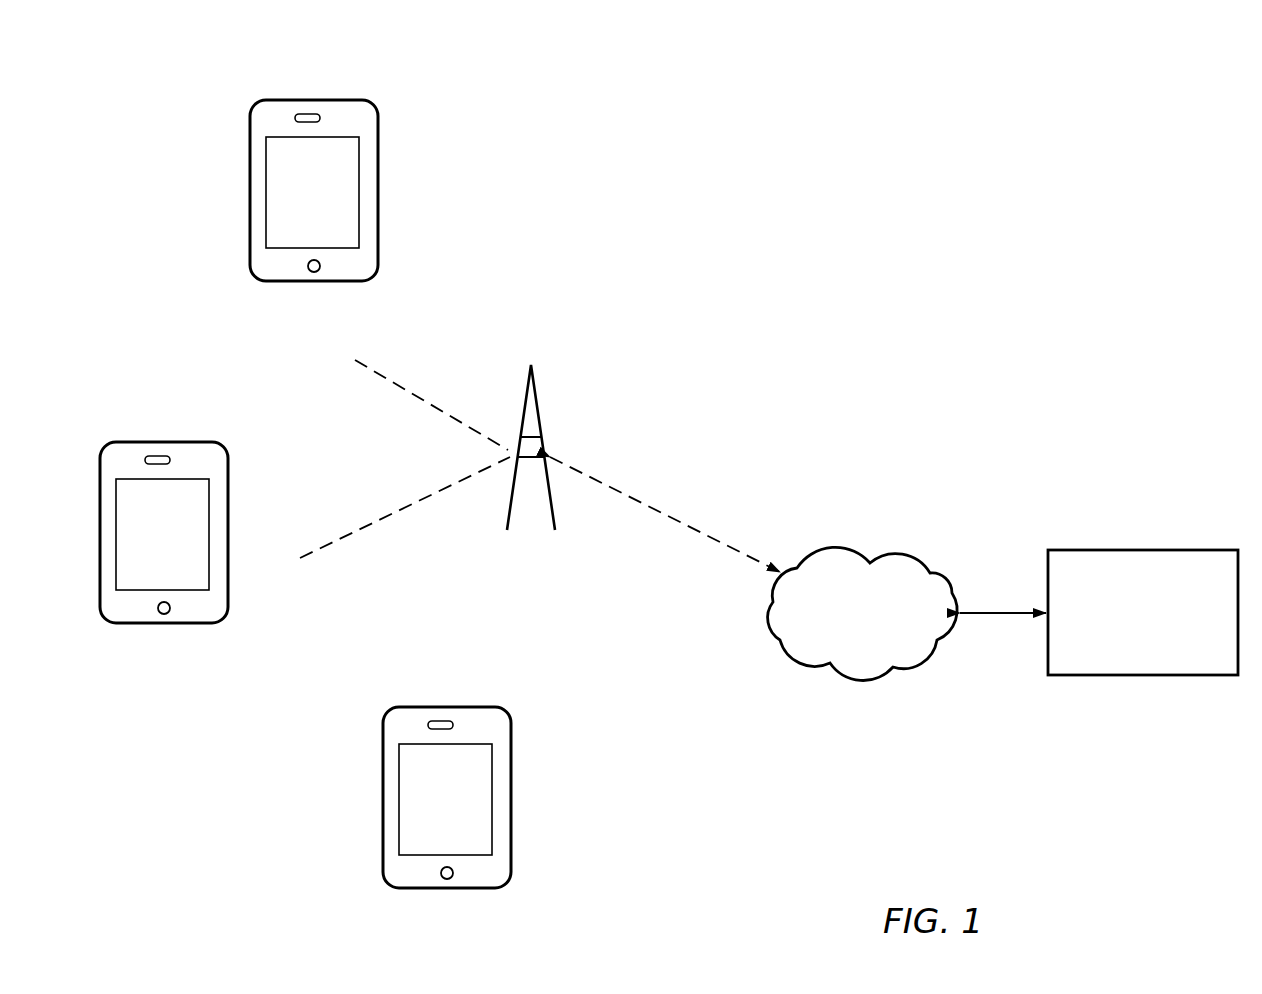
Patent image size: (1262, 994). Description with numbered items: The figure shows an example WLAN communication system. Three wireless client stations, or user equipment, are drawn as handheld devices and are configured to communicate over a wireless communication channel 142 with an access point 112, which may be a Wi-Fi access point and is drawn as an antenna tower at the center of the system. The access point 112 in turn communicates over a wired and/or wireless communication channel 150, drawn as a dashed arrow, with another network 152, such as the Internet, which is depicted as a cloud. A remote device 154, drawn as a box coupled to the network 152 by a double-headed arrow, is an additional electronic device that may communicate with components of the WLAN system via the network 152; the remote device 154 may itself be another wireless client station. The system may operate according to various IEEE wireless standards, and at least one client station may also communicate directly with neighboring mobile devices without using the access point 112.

The access point 112 is at (550, 530).
The wireless communication channel 142 is at (417, 502).
The communication channel 150 is at (673, 518).
The network 152 is at (882, 635).
The remote device 154 is at (1165, 647).